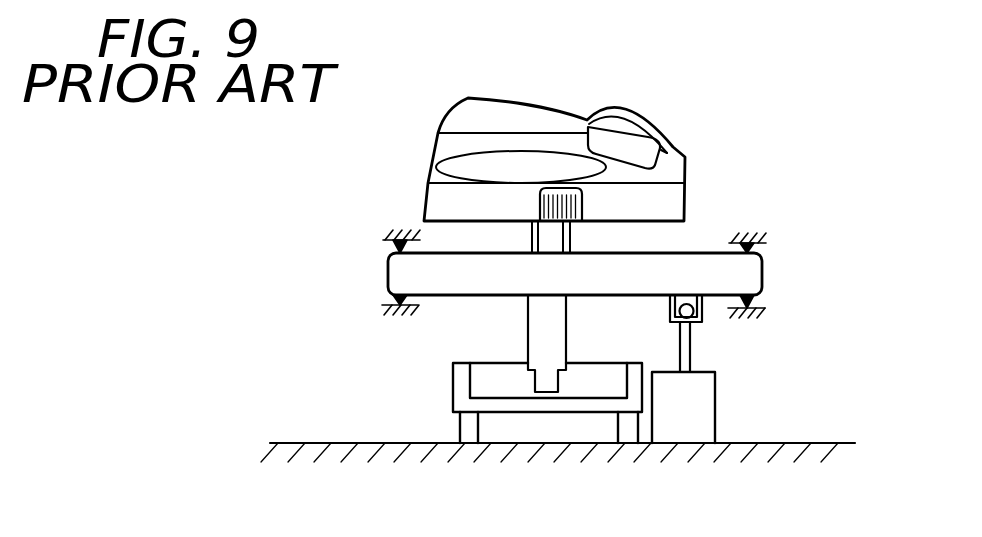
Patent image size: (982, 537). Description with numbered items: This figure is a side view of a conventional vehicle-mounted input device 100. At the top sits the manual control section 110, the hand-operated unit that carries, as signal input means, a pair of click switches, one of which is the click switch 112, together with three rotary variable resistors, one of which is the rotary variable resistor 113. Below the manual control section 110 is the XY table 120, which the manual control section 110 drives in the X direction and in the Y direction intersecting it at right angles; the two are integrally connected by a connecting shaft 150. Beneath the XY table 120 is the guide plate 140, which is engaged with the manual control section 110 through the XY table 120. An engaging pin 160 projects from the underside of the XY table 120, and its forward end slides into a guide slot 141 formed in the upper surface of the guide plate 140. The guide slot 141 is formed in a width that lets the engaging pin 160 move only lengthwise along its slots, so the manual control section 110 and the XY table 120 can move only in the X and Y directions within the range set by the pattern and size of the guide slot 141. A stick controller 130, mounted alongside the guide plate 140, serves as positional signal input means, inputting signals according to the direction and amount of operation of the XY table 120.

The vehicle-mounted input device 100 is at (690, 151).
The manual control section 110 is at (515, 98).
The click switch 112 is at (643, 165).
The rotary variable resistor 113 is at (650, 120).
The XY table 120 is at (762, 278).
The stick controller 130 is at (698, 415).
The guide plate 140 is at (633, 383).
The guide slot 141 is at (503, 387).
The connecting shaft 150 is at (548, 228).
The engaging pin 160 is at (528, 323).